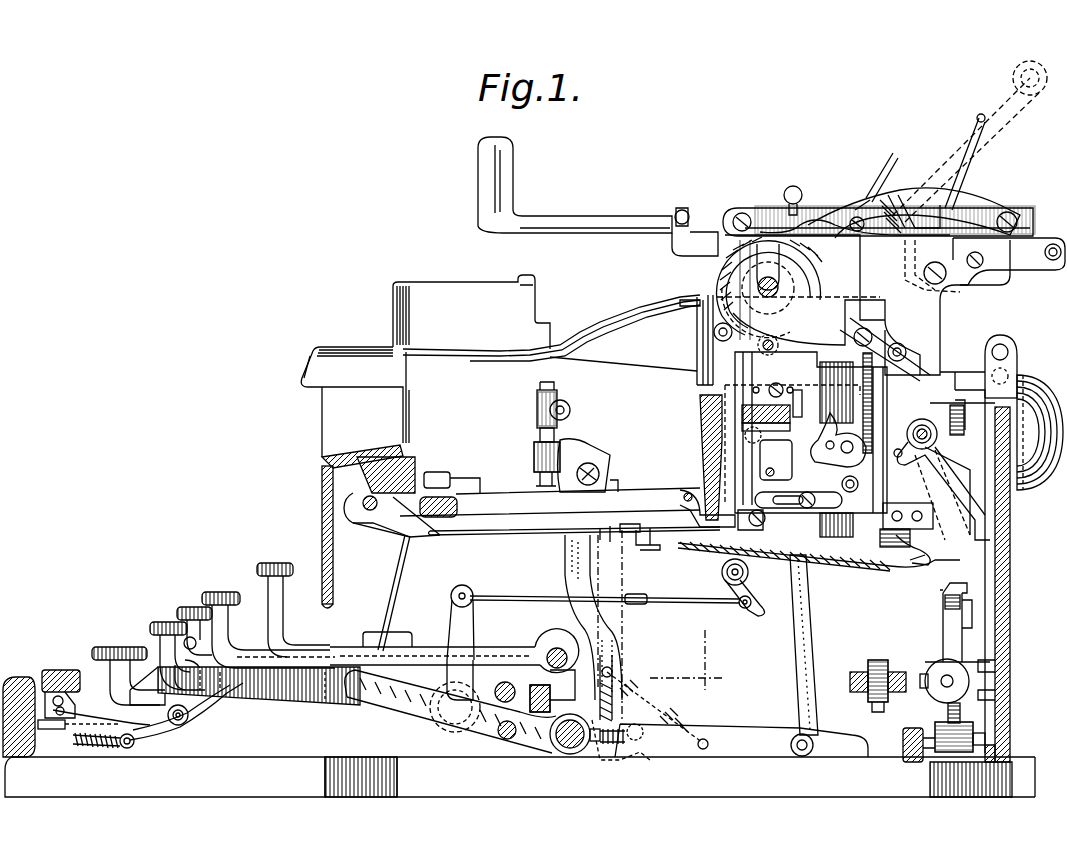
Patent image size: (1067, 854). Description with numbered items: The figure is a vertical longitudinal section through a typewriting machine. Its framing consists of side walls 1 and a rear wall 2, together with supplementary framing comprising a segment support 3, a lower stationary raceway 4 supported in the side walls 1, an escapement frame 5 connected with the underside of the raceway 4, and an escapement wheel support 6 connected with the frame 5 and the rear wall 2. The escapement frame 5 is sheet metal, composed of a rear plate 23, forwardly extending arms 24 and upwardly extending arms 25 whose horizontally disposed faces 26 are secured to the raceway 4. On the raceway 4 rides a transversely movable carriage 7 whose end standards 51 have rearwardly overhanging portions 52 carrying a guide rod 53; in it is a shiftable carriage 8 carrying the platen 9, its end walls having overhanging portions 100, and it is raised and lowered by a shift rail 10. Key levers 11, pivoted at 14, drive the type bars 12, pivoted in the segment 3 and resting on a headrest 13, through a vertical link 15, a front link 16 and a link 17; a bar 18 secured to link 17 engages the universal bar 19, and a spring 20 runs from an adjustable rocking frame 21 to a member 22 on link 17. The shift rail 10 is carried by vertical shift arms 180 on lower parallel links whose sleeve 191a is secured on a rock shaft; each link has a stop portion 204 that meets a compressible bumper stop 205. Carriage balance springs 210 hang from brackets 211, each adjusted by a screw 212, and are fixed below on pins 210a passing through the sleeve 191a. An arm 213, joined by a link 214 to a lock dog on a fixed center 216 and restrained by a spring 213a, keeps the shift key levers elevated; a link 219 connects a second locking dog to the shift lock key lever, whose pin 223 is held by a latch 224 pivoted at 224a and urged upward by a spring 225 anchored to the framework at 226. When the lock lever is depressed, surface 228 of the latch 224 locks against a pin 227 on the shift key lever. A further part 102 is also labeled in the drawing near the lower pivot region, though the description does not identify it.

The side walls 1 is at (519, 536).
The rear wall 2 is at (1003, 612).
The segment support 3 is at (635, 203).
The lower stationary raceway 4 is at (700, 428).
The escapement frame 5 is at (872, 520).
The escapement wheel support 6 is at (965, 355).
The transversely movable carriage 7 is at (738, 310).
The shiftable carriage 8 is at (770, 352).
The platen 9 is at (720, 262).
The shift rail 10 is at (861, 482).
The key levers 11 is at (200, 592).
The type bars 12 is at (500, 510).
The headrest 13 is at (432, 495).
The key lever pivot 14 is at (690, 492).
The vertical link 15 is at (405, 580).
The front link 16 is at (395, 530).
The link 17 is at (520, 545).
The bar or link 18 is at (782, 560).
The universal bar 19 is at (930, 548).
The spring 20 is at (860, 578).
The adjustable rocking frame 21 is at (945, 626).
The member 22 is at (648, 548).
The rear plate 23 is at (925, 428).
The forwardly extending arms 24 is at (805, 510).
The upwardly extending arms 25 is at (720, 470).
The horizontally disposed faces 26 is at (745, 440).
The end standards 51 is at (935, 307).
The overhanging portions 52 is at (994, 261).
The guide rod 53 is at (962, 271).
The overhanging portions 100 is at (990, 212).
The pivot shaft 102 is at (573, 750).
The vertical shift arms 180 is at (800, 660).
The sleeve 191a is at (545, 755).
The stop portion 204 is at (855, 752).
The compressible bumper stop 205 is at (878, 672).
The carriage balance springs 210 is at (628, 625).
The pins 210a is at (612, 748).
The brackets 211 is at (570, 465).
The screw 212 is at (537, 390).
The arm 213 is at (588, 548).
The spring 213a is at (660, 700).
The link 214 is at (600, 560).
The center 216 is at (745, 595).
The link 219 is at (593, 622).
The pin 223 is at (220, 640).
The latch 224 is at (150, 730).
The latch pivot 224a is at (60, 672).
The spring 225 is at (110, 750).
The framework connection 226 is at (128, 750).
The pin 227 is at (185, 720).
The latch surface 228 is at (195, 703).